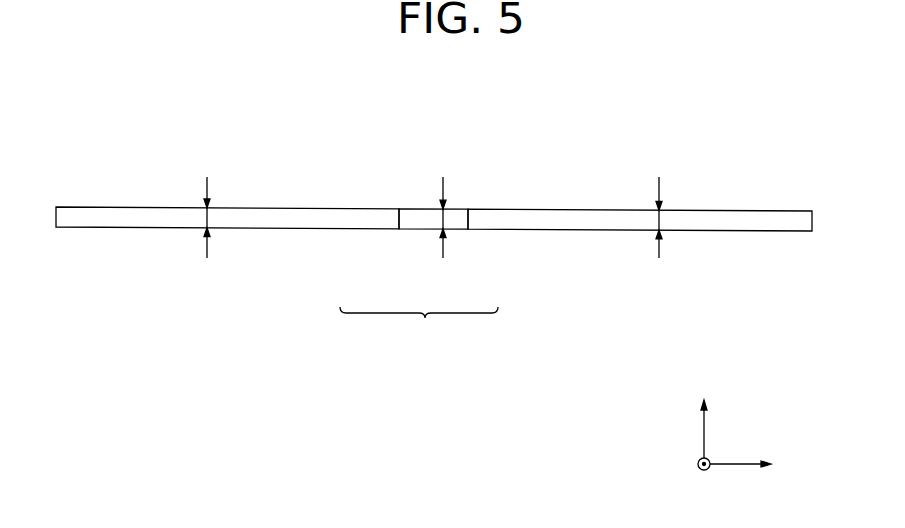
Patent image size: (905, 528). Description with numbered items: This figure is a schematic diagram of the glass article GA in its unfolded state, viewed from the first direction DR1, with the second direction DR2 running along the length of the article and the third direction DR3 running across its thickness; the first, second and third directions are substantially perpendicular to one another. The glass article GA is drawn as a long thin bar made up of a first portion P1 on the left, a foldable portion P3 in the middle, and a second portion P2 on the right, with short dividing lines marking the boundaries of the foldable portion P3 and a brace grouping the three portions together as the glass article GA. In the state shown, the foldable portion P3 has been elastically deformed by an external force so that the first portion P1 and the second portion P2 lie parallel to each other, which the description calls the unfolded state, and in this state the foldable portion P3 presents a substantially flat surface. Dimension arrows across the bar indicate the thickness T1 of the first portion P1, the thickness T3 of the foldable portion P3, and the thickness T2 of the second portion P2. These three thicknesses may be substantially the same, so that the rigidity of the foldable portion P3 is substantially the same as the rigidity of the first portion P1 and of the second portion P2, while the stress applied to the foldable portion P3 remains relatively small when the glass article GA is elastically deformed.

The first portion P1 is at (361, 223).
The second portion P2 is at (488, 222).
The foldable portion P3 is at (427, 222).
The glass article GA is at (419, 326).
The thickness of the first portion T1 is at (206, 205).
The thickness of the second portion T2 is at (659, 205).
The thickness of the foldable portion T3 is at (442, 205).
The first direction DR1 is at (681, 465).
The second direction DR2 is at (761, 465).
The third direction DR3 is at (705, 415).